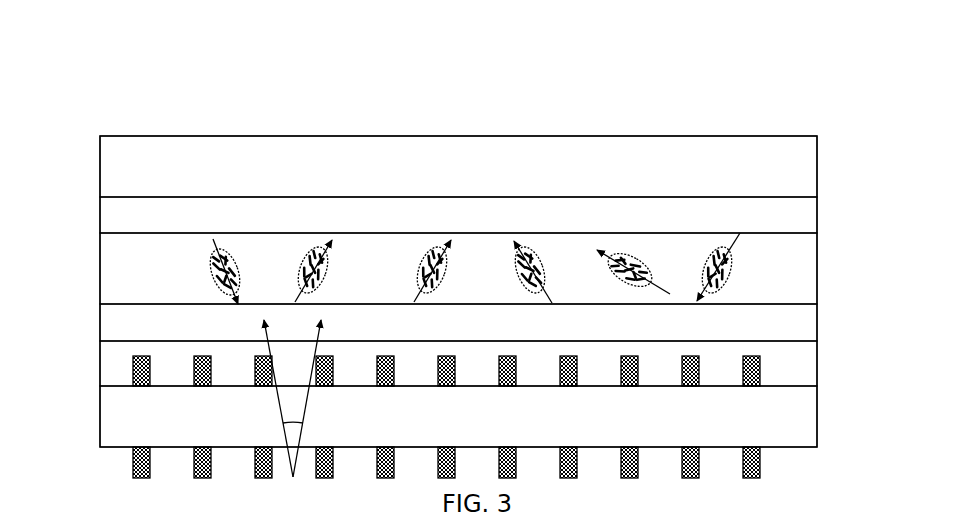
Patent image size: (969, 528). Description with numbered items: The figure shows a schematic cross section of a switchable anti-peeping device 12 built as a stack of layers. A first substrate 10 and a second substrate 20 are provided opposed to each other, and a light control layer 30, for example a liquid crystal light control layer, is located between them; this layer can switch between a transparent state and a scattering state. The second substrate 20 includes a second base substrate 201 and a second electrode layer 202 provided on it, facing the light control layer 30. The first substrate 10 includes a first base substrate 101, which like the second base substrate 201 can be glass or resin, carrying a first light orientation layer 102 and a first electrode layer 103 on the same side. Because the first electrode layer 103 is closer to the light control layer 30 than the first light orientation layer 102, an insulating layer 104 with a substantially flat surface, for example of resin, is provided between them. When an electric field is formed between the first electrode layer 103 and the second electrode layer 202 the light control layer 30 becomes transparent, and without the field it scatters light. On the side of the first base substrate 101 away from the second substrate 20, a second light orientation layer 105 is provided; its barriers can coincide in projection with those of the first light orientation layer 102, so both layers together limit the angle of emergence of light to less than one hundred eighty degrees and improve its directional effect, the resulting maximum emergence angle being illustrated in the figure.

The switchable anti-peeping device 12 is at (605, 83).
The second substrate 20 is at (82, 135).
The second base substrate 201 is at (808, 190).
The second electrode layer 202 is at (808, 222).
The light control layer 30 is at (130, 270).
The first substrate 10 is at (82, 304).
The first electrode layer 103 is at (802, 323).
The insulating layer 104 is at (797, 361).
The first light orientation layer 102 is at (762, 371).
The first base substrate 101 is at (808, 421).
The second light orientation layer 105 is at (762, 462).